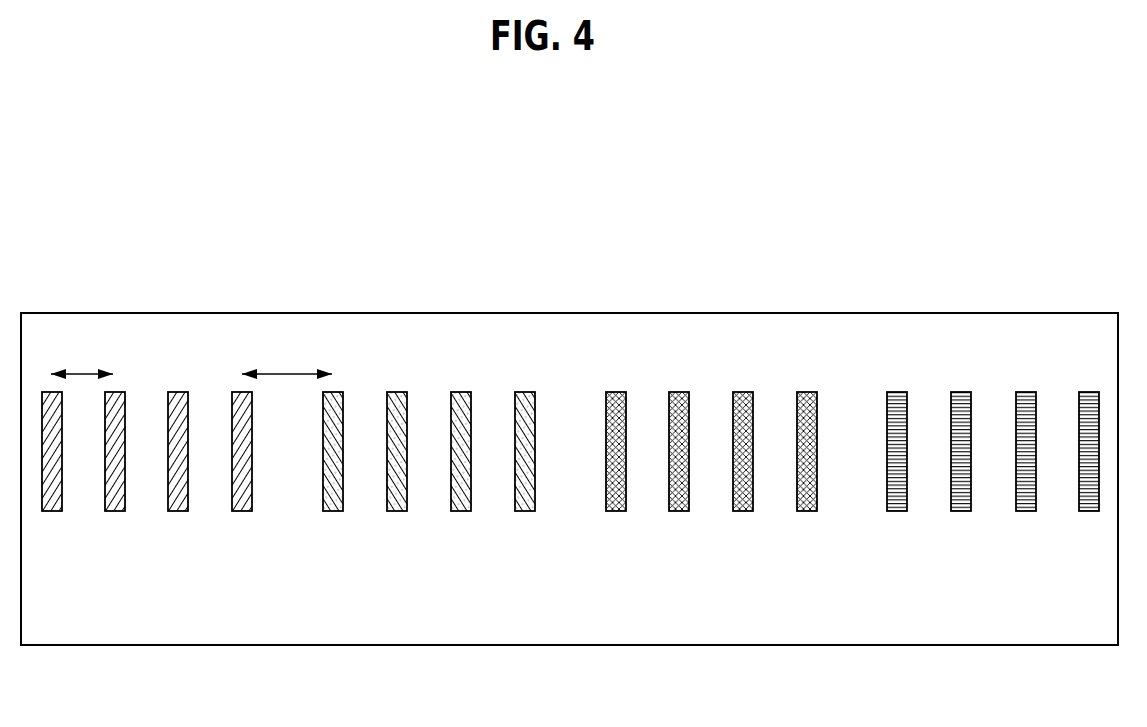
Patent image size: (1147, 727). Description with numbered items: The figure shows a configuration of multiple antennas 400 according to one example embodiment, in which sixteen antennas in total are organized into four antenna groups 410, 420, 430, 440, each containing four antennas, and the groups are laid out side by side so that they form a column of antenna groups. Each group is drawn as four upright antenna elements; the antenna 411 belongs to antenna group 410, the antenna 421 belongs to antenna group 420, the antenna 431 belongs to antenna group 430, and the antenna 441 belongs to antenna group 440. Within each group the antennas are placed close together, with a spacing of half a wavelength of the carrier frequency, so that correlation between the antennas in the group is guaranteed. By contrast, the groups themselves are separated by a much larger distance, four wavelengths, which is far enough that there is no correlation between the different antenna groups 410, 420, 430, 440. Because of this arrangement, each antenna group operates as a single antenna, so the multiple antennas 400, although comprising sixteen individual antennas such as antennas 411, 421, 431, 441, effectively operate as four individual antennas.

The multiple antennas 400 is at (571, 646).
The antenna group 410 is at (146, 480).
The antenna 411 is at (171, 390).
The antenna group 420 is at (429, 480).
The antenna 421 is at (454, 390).
The antenna group 430 is at (712, 480).
The antenna 431 is at (736, 390).
The antenna group 440 is at (997, 480).
The antenna 441 is at (1019, 390).